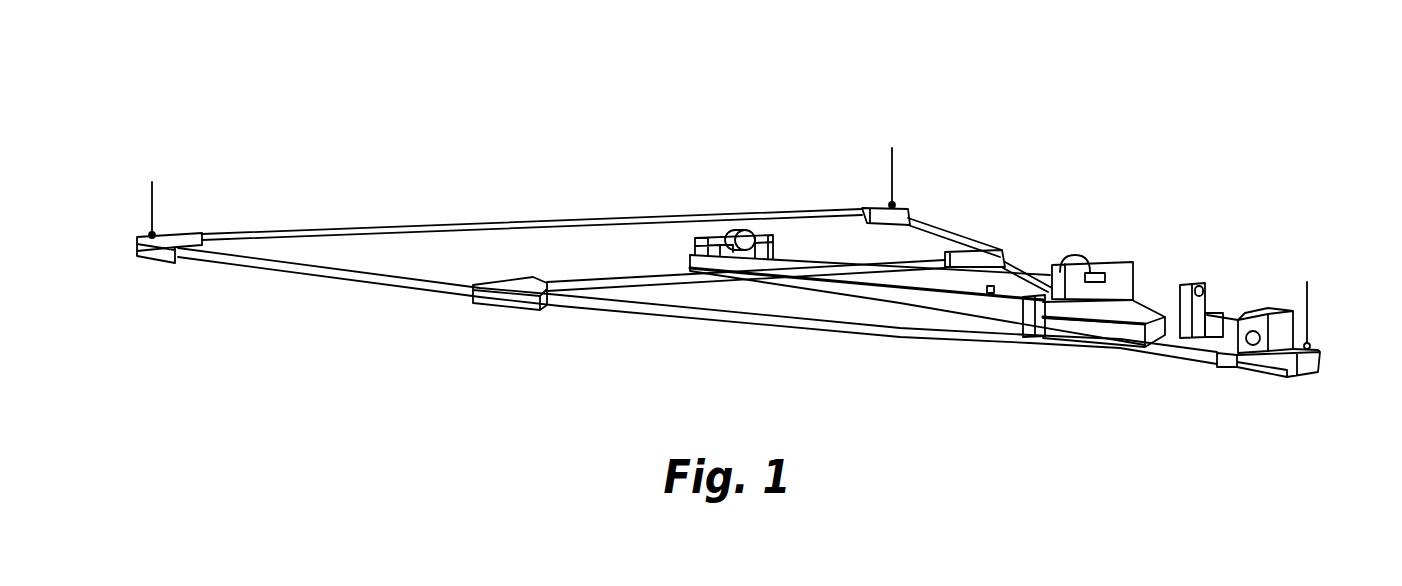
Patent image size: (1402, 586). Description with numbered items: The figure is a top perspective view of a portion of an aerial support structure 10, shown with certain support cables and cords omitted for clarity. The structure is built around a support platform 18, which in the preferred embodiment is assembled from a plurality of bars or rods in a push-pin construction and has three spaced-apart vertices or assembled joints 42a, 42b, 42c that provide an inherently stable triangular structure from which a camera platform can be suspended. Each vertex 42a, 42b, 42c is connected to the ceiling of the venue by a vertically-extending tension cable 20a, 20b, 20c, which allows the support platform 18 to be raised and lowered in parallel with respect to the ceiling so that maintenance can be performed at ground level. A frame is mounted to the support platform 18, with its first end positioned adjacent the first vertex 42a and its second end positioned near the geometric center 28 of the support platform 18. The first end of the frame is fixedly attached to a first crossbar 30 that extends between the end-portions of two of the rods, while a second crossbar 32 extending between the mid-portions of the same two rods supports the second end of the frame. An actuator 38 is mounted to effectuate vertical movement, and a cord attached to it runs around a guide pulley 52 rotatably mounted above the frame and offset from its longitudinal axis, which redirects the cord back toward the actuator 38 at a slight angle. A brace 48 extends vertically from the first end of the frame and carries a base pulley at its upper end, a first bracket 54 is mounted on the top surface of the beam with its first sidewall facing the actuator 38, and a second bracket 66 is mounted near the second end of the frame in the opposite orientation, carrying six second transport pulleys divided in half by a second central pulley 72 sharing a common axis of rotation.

The aerial support structure 10 is at (497, 127).
The support platform 18 is at (383, 232).
The tension cable 20a is at (1312, 308).
The tension cable 20b is at (895, 170).
The tension cable 20c is at (150, 207).
The geometric center 28 is at (723, 277).
The first crossbar 30 is at (1097, 338).
The second crossbar 32 is at (626, 283).
The actuator 38 is at (1292, 317).
The first vertex 42a is at (1232, 363).
The vertex 42b is at (875, 203).
The vertex 42c is at (155, 250).
The brace 48 is at (1198, 302).
The guide pulley 52 is at (990, 290).
The first bracket 54 is at (1122, 275).
The second bracket 66 is at (700, 245).
The second central pulley 72 is at (743, 235).